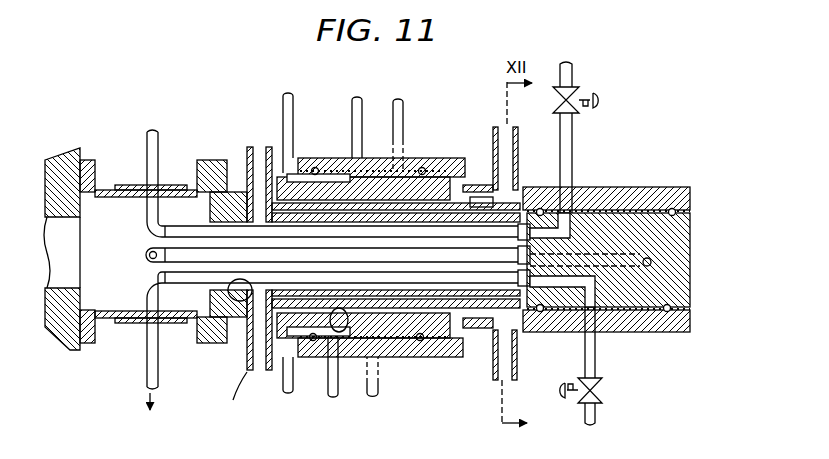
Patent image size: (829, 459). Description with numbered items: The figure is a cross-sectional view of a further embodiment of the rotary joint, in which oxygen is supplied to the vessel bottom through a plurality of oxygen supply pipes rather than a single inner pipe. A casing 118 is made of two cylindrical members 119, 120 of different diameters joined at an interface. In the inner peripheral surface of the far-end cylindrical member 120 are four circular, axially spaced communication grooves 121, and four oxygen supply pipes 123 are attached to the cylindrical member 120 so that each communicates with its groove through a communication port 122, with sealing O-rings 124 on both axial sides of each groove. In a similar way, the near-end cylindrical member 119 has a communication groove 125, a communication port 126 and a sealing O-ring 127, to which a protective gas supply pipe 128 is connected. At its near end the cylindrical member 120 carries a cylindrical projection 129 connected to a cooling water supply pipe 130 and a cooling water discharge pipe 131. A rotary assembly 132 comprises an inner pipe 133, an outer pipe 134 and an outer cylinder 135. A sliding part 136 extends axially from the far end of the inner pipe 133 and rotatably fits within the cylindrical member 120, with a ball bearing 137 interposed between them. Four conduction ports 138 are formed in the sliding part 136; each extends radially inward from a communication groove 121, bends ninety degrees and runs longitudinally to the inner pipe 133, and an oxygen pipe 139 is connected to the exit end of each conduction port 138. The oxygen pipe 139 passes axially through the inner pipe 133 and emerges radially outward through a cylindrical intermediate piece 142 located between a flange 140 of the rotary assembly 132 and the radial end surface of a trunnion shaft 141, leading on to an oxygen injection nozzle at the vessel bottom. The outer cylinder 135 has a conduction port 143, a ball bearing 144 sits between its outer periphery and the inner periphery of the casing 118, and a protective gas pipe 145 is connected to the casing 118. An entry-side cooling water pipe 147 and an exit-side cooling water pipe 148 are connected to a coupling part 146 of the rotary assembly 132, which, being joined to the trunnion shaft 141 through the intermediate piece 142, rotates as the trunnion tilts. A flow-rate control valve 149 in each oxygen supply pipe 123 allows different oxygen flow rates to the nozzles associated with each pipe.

The casing 118 is at (610, 255).
The cylindrical member 119 is at (432, 157).
The cylindrical member 120 is at (638, 195).
The communication groove 121 is at (630, 333).
The communication port 122 is at (596, 318).
The oxygen supply pipe 123 is at (597, 366).
The sealing O-ring 124 is at (622, 316).
The communication groove 125 is at (398, 350).
The communication port 126 is at (373, 348).
The sealing O-ring 127 is at (420, 340).
The protective gas supply pipe 128 is at (378, 388).
The cylindrical projection 129 is at (513, 185).
The cooling water supply pipe 130 is at (512, 388).
The cooling water discharge pipe 131 is at (492, 128).
The rotary assembly 132 is at (238, 152).
The inner pipe 133 is at (212, 294).
The outer pipe 134 is at (250, 371).
The outer cylinder 135 is at (345, 336).
The sliding part 136 is at (592, 222).
The ball bearing 137 is at (672, 208).
The conduction port 138 is at (565, 285).
The oxygen pipe 139 is at (506, 345).
The flange 140 is at (214, 162).
The trunnion shaft 141 is at (65, 176).
The cylindrical intermediate piece 142 is at (108, 189).
The conduction port 143 is at (318, 360).
The ball bearing 144 is at (310, 348).
The protective gas pipe 145 is at (286, 392).
The coupling part 146 is at (238, 340).
The entry-side cooling water pipe 147 is at (253, 146).
The exit-side cooling water pipe 148 is at (332, 345).
The flow-rate control valve 149 is at (573, 96).